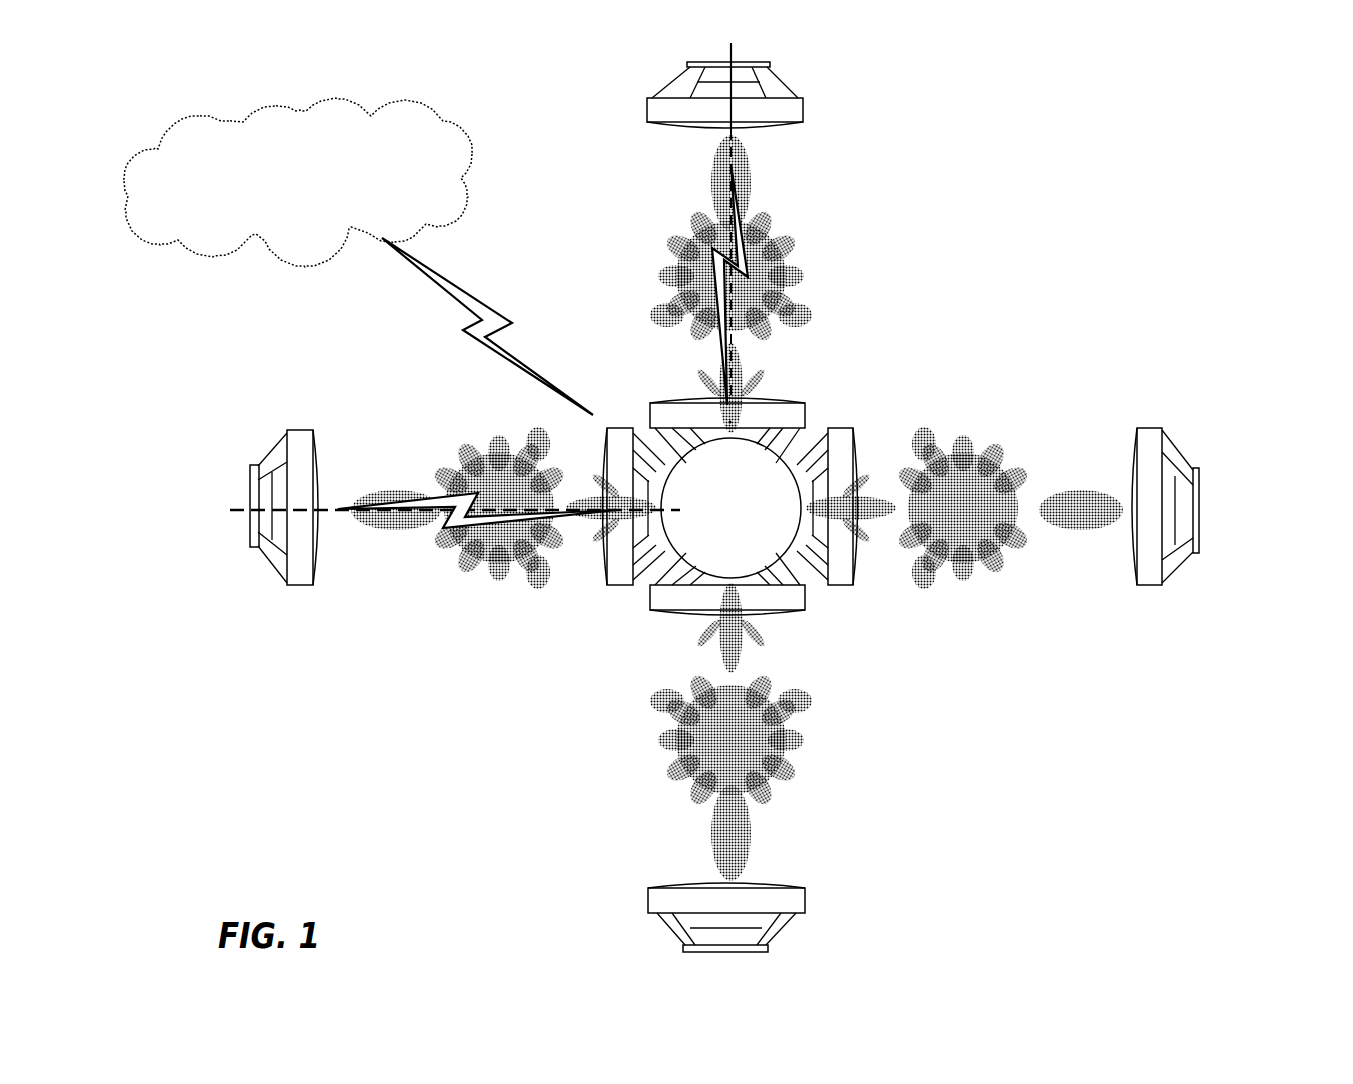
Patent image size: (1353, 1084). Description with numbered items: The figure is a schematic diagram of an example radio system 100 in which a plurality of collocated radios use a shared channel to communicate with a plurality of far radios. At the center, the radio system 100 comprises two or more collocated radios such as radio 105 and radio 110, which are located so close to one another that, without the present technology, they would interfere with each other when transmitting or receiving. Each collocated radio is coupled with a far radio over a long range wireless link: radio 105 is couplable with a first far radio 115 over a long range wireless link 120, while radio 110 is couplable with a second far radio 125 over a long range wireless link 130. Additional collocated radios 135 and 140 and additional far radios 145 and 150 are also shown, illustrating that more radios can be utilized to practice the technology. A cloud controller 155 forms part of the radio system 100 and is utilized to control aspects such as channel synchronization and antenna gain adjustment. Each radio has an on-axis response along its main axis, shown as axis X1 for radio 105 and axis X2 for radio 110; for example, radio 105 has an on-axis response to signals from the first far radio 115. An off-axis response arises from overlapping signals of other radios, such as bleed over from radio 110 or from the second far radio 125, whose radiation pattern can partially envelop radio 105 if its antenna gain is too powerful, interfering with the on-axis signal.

The radio system 100 is at (753, 504).
The radio 105 is at (678, 417).
The radio 110 is at (620, 575).
The first far radio 115 is at (790, 108).
The long range wireless link 120 is at (740, 237).
The second far radio 125 is at (302, 573).
The long range wireless link 130 is at (422, 498).
The radio 135 is at (850, 430).
The radio 140 is at (790, 602).
The far radio 145 is at (1148, 578).
The far radio 150 is at (788, 905).
The cloud controller 155 is at (315, 209).
The axis X1 is at (730, 422).
The axis X2 is at (615, 510).